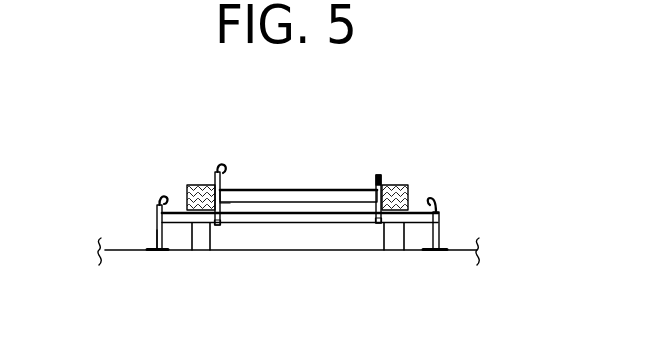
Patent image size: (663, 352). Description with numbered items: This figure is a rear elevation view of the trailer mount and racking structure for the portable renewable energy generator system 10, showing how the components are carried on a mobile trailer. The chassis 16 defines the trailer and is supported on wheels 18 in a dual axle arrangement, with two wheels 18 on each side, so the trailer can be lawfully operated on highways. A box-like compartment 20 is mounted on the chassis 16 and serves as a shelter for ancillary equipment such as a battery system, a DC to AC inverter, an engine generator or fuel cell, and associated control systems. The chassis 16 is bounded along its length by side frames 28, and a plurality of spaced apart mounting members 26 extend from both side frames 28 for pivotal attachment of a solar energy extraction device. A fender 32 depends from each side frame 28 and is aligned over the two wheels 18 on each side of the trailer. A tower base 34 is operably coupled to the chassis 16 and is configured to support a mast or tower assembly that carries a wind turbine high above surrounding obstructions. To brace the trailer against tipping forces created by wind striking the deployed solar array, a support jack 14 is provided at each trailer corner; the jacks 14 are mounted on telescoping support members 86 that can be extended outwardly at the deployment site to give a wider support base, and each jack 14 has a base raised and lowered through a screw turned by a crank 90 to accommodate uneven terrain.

The portable renewable energy generator system 10 is at (434, 289).
The support jack 14 is at (440, 230).
The chassis 16 is at (270, 200).
The wheel 18 is at (408, 212).
The compartment 20 is at (328, 200).
The mounting member 26 is at (216, 170).
The side frame 28 is at (377, 225).
The fender 32 is at (185, 187).
The tower base 34 is at (230, 202).
The telescoping support member 86 is at (157, 238).
The crank 90 is at (157, 203).